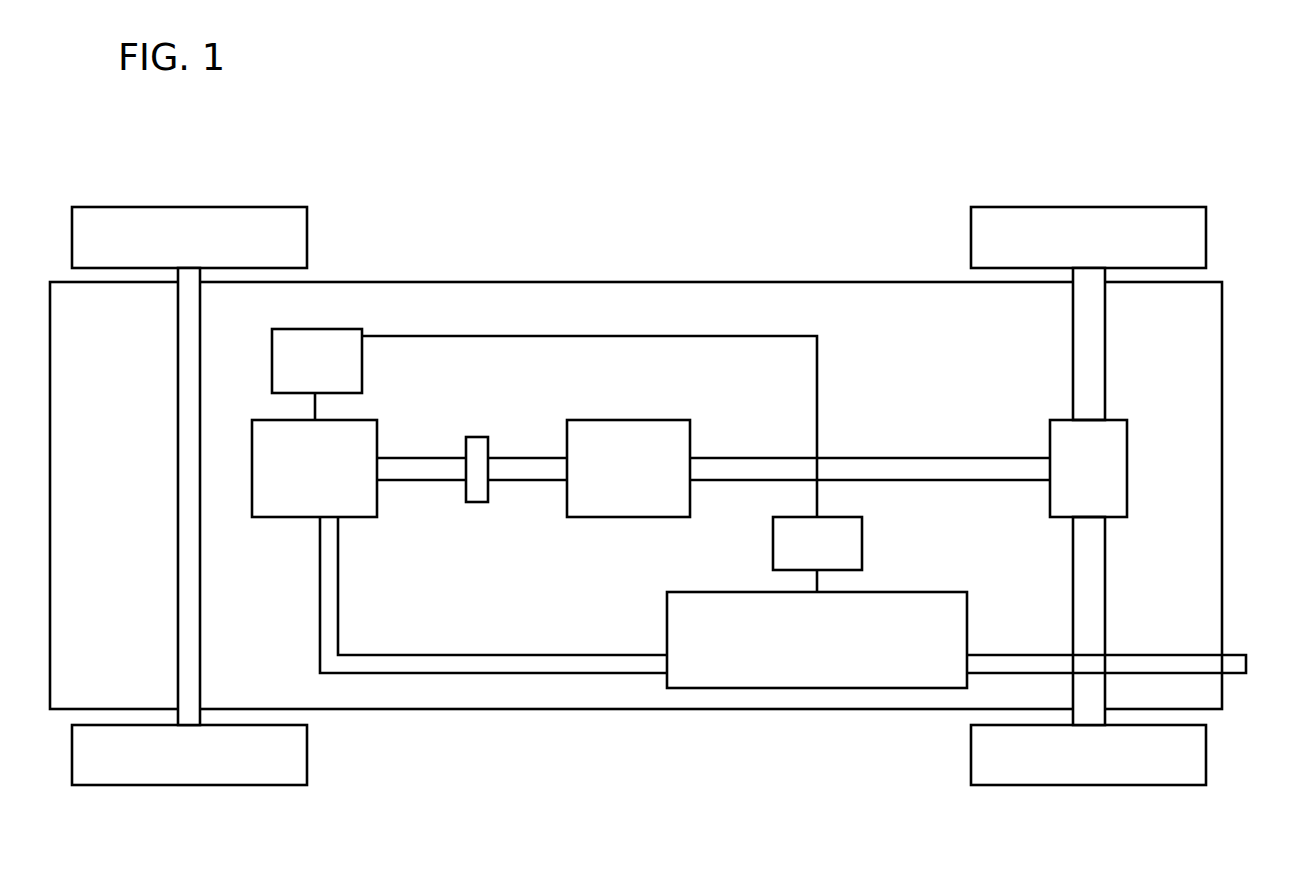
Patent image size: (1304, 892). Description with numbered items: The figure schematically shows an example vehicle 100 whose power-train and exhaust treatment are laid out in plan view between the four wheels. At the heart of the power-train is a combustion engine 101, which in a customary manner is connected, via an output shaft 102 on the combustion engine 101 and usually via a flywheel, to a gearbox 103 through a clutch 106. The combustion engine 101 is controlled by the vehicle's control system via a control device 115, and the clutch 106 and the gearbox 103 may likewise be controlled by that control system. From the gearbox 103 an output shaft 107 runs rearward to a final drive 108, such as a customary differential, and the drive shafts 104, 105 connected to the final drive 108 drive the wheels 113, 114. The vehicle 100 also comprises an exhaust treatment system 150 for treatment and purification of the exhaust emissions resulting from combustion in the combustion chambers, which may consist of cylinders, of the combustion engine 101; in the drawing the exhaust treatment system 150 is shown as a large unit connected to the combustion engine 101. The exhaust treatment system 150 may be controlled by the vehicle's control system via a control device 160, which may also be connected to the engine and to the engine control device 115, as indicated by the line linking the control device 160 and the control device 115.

The vehicle 100 is at (537, 111).
The combustion engine 101 is at (287, 505).
The output shaft 102 is at (398, 466).
The gearbox 103 is at (631, 433).
The drive shaft 104 is at (1092, 341).
The drive shaft 105 is at (1098, 631).
The clutch 106 is at (473, 489).
The output shaft 107 is at (970, 471).
The final drive 108 is at (1120, 465).
The wheel 113 is at (1200, 232).
The wheel 114 is at (1200, 760).
The control device 115 is at (327, 360).
The exhaust treatment system 150 is at (835, 683).
The control device 160 is at (816, 553).